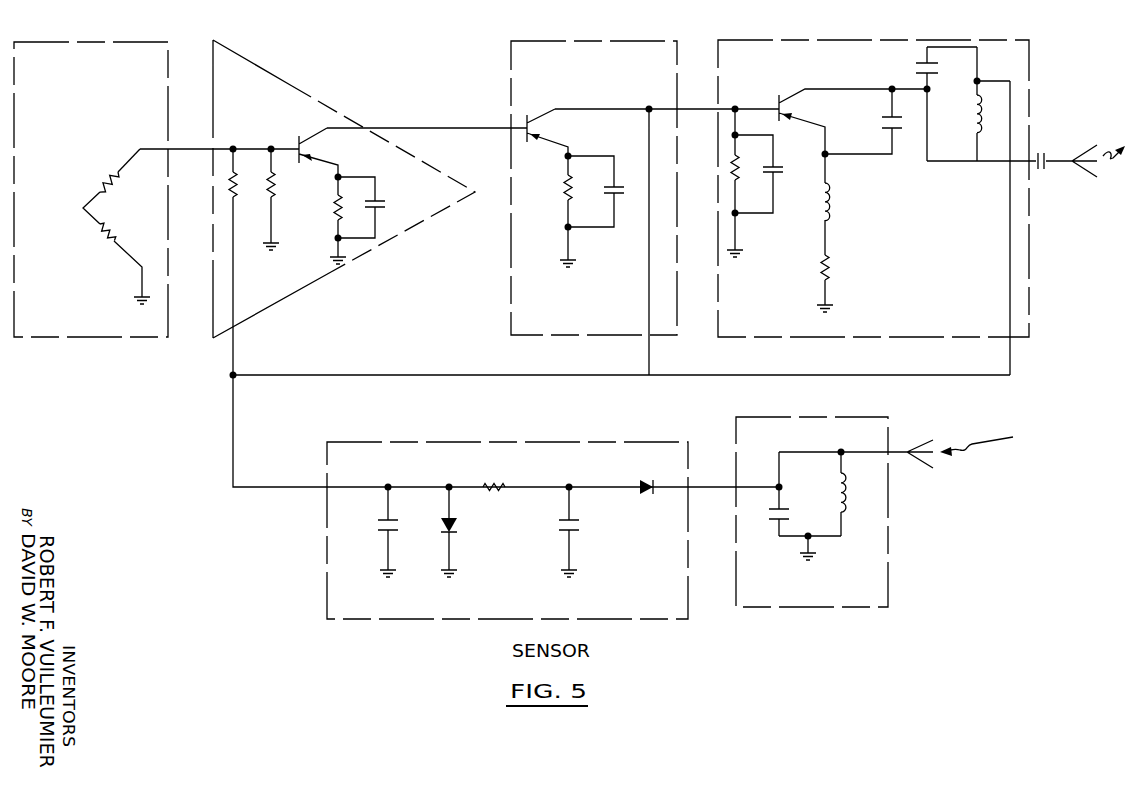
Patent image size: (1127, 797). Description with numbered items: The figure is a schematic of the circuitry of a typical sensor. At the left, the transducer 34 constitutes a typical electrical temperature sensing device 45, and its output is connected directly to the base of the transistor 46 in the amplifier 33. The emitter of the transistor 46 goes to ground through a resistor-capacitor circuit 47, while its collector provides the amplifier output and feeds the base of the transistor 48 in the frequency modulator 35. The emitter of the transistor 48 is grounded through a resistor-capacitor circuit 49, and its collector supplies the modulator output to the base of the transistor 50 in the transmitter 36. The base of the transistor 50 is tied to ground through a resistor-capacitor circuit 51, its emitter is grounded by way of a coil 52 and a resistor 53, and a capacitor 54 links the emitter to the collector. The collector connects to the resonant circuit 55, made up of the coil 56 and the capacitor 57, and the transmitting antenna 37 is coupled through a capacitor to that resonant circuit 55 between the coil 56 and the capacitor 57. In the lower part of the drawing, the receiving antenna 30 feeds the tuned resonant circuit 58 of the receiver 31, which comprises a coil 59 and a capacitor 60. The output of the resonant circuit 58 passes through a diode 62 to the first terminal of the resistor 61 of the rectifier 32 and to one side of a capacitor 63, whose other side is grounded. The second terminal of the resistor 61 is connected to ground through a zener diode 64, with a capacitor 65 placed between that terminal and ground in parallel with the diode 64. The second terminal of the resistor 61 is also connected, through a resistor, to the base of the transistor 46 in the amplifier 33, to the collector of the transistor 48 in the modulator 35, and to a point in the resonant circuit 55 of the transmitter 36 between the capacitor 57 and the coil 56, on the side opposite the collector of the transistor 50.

The receiving antenna 30 is at (931, 435).
The receiver 31 is at (856, 432).
The rectifier 32 is at (612, 456).
The amplifier 33 is at (300, 94).
The transducer 34 is at (76, 306).
The frequency modulator 35 is at (522, 86).
The transmitter 36 is at (766, 308).
The transmitting antenna 37 is at (1084, 155).
The electrical temperature sensing device 45 is at (84, 222).
The transistor 46 is at (310, 141).
The resistor-capacitor circuit 47 is at (362, 190).
The transistor 48 is at (545, 118).
The resistor-capacitor circuit 49 is at (586, 207).
The transistor 50 is at (796, 104).
The resistor-capacitor circuit 51 is at (750, 190).
The coil 52 is at (833, 200).
The resistor 53 is at (832, 268).
The capacitor 54 is at (900, 126).
The resonant circuit 55 is at (953, 132).
The coil 56 is at (984, 134).
The capacitor 57 is at (914, 68).
The tuned resonant circuit 58 is at (820, 510).
The coil 59 is at (848, 489).
The capacitor 60 is at (770, 516).
The resistor 61 is at (506, 483).
The diode 62 is at (644, 494).
The capacitor 63 is at (578, 524).
The zener diode 64 is at (458, 526).
The capacitor 65 is at (396, 519).